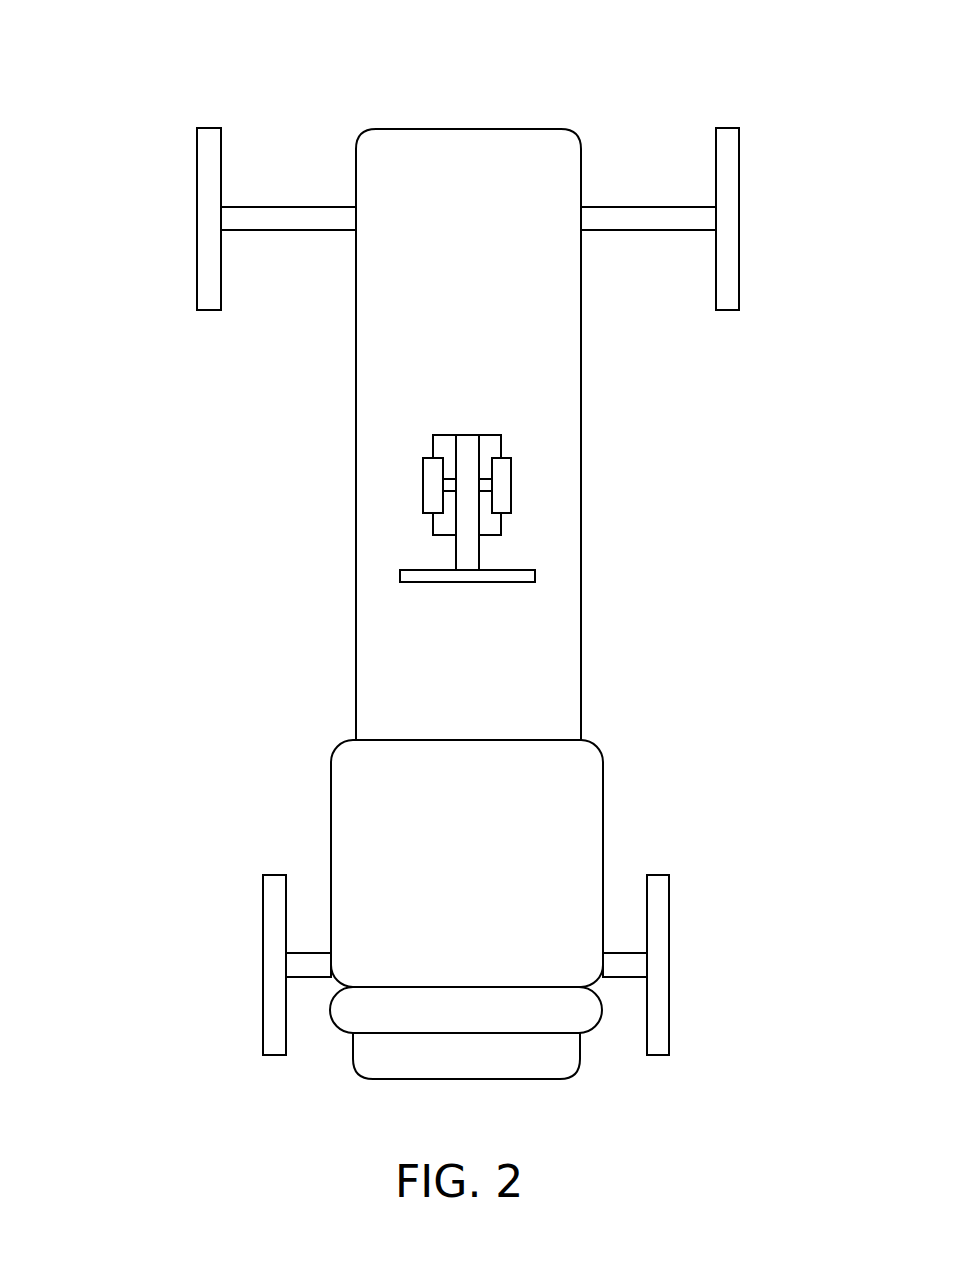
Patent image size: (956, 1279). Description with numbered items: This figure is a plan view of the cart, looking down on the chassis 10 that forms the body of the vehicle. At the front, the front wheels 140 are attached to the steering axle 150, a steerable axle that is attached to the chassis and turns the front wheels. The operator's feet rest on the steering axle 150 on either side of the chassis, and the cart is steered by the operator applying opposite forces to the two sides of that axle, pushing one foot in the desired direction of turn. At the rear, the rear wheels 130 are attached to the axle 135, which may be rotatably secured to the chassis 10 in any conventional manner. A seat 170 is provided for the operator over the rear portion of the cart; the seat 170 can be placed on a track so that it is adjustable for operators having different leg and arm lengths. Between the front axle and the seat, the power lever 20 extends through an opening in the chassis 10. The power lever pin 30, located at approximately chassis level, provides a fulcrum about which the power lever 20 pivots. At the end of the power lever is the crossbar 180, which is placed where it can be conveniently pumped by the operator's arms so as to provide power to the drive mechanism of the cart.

The chassis 10 is at (497, 252).
The power lever 20 is at (479, 545).
The power lever pin 30 is at (482, 478).
The rear wheels 130 is at (680, 922).
The axle 135 is at (312, 978).
The front wheels 140 is at (742, 184).
The steering axle 150 is at (634, 204).
The seat 170 is at (488, 925).
The crossbar 180 is at (417, 560).